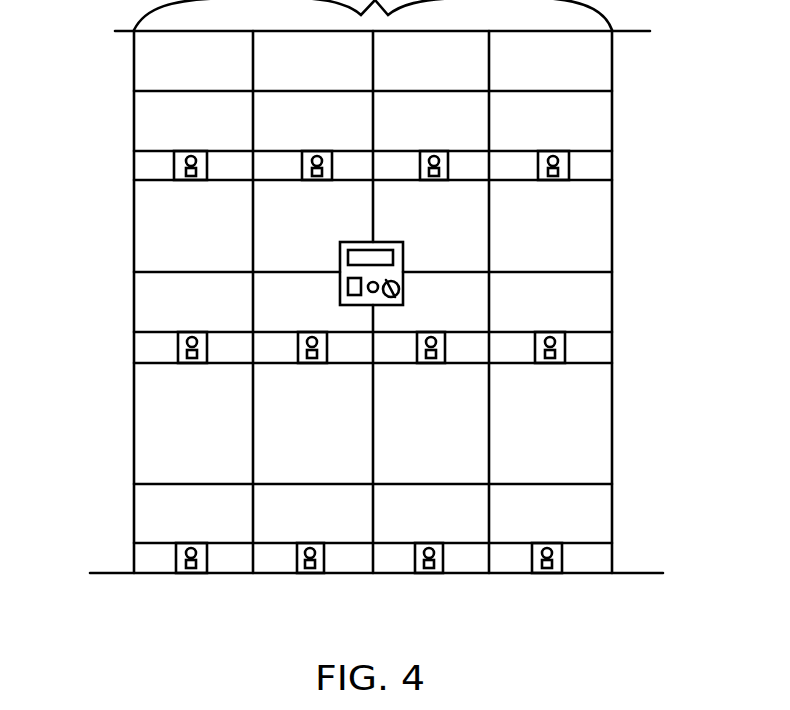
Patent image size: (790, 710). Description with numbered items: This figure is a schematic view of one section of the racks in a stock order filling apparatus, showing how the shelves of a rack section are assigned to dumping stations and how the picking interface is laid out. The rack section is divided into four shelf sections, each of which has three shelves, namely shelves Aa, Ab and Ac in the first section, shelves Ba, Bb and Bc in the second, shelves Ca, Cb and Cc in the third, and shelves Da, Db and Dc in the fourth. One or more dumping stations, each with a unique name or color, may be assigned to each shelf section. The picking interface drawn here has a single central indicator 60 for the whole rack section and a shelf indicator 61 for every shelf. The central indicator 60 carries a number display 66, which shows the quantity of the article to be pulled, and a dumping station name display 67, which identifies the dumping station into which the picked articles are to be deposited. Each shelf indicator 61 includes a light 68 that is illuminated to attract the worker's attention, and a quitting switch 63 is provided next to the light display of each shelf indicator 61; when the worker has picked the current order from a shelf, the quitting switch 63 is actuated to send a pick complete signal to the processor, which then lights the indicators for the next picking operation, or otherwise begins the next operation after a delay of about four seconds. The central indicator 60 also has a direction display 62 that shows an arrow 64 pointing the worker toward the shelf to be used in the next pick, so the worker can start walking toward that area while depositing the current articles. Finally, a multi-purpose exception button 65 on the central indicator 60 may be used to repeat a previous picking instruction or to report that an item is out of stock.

The central indicator 60 is at (384, 240).
The shelf indicator 61 is at (203, 150).
The direction display 62 is at (398, 280).
The quitting switch 63 is at (191, 181).
The arrow 64 is at (393, 298).
The multi-purpose exception button 65 is at (373, 295).
The number display 66 is at (348, 287).
The dumping station name display 67 is at (352, 262).
The light 68 is at (192, 153).
The shelf Aa is at (146, 133).
The shelf Ab is at (148, 318).
The shelf Ac is at (145, 513).
The shelf Ba is at (310, 118).
The shelf Bb is at (282, 335).
The shelf Bc is at (292, 510).
The shelf Ca is at (427, 125).
The shelf Cb is at (452, 325).
The shelf Cc is at (435, 505).
The shelf Da is at (592, 118).
The shelf Db is at (577, 335).
The shelf Dc is at (542, 505).